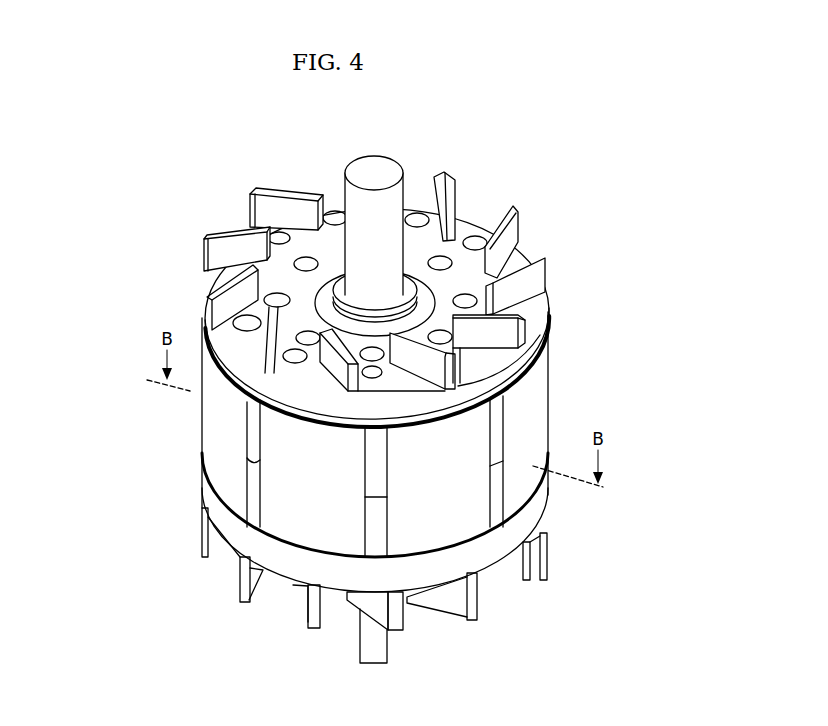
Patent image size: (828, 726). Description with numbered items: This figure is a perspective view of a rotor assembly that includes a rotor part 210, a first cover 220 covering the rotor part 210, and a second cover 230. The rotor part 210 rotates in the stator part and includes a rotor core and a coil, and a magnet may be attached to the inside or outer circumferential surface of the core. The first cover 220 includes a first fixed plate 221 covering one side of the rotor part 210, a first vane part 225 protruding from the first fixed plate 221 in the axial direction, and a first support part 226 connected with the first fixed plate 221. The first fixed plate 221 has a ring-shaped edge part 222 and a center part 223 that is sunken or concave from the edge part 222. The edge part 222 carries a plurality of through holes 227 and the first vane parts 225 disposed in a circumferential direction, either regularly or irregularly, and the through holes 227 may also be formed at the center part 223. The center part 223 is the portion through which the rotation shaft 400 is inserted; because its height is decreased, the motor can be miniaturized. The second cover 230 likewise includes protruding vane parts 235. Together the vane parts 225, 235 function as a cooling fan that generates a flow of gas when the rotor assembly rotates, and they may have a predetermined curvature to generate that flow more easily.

The rotor part 210 is at (200, 455).
The first cover 220 is at (505, 175).
The first fixed plate 221 is at (240, 222).
The edge part 222 is at (230, 231).
The center part 223 is at (290, 223).
The first vane part 225 is at (533, 284).
The first support part 226 is at (253, 427).
The through holes 227 is at (408, 209).
The second cover 230 is at (553, 563).
The vane part 235 is at (257, 587).
The rotation shaft 400 is at (372, 170).